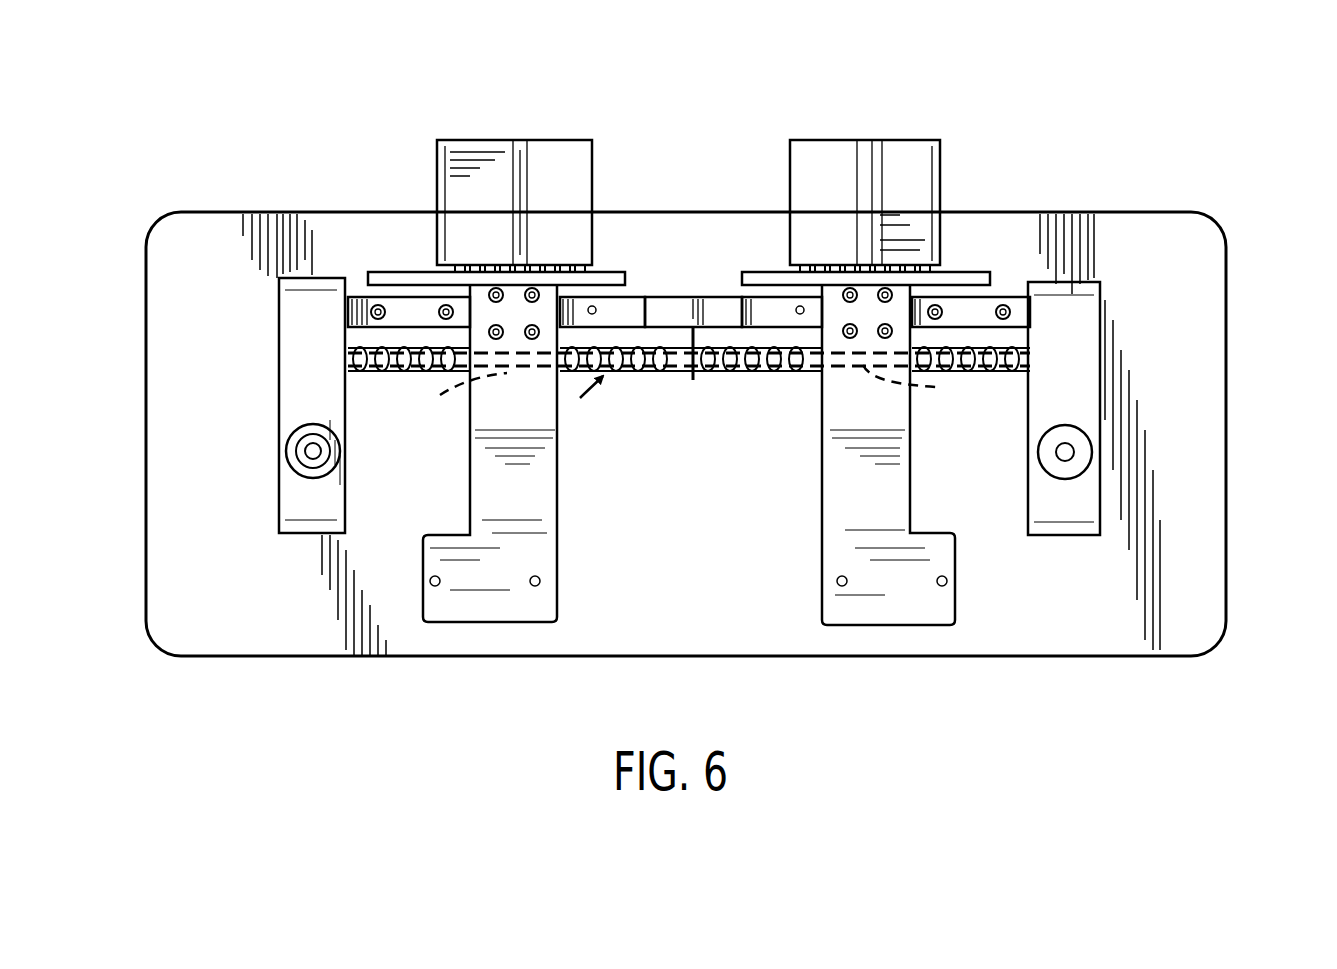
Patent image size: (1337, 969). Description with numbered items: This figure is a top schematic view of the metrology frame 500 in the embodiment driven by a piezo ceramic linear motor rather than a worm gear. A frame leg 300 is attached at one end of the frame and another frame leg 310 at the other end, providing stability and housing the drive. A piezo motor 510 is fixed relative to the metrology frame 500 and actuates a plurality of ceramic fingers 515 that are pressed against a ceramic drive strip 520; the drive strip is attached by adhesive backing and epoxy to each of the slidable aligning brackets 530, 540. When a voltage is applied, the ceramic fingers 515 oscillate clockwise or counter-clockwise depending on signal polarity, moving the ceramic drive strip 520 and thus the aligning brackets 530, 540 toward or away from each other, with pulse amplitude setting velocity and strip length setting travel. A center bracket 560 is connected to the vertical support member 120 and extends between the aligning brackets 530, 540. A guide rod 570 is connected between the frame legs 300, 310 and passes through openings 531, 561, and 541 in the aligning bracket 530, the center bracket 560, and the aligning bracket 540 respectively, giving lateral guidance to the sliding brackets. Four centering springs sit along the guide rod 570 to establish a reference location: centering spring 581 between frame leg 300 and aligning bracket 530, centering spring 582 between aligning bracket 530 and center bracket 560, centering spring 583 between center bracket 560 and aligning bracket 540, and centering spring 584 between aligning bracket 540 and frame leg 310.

The metrology frame 500 is at (245, 163).
The frame leg 300 is at (1112, 418).
The frame leg 310 is at (282, 411).
The piezo motor 510 is at (546, 139).
The ceramic fingers 515 is at (790, 265).
The ceramic drive strip 520 is at (428, 263).
The vertical support member 120 is at (693, 300).
The aligning bracket 540 is at (558, 515).
The aligning bracket 530 is at (837, 518).
The opening 541 is at (390, 375).
The opening 531 is at (1003, 377).
The center bracket 560 is at (693, 378).
The opening 561 is at (693, 370).
The guide rod 570 is at (591, 408).
The centering spring 582 is at (782, 372).
The centering spring 583 is at (633, 375).
The centering spring 584 is at (351, 451).
The centering spring 581 is at (1029, 452).